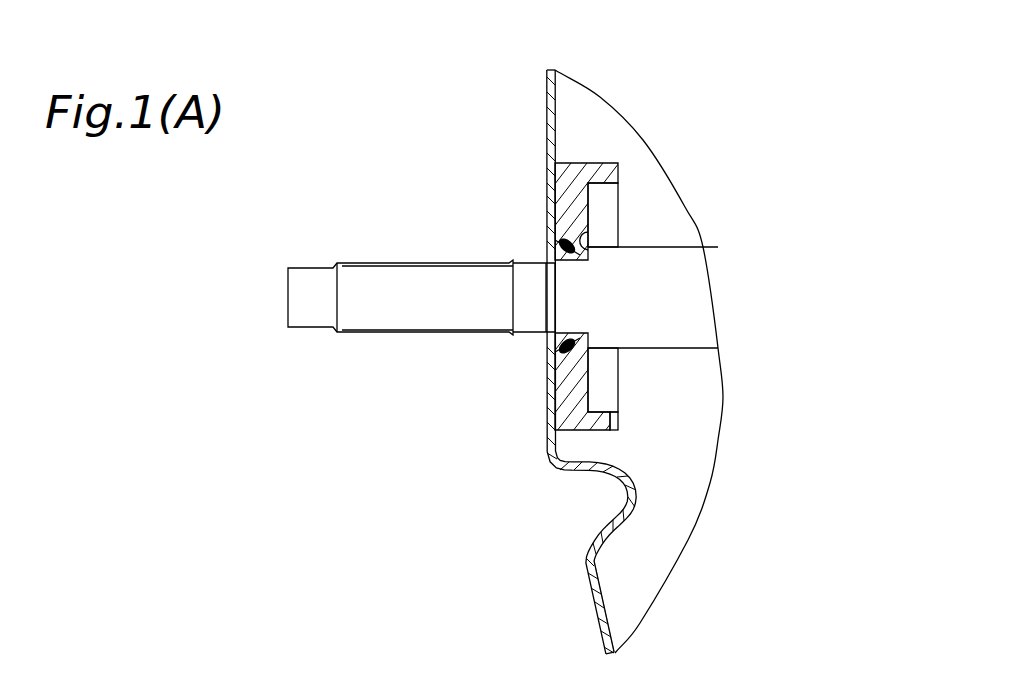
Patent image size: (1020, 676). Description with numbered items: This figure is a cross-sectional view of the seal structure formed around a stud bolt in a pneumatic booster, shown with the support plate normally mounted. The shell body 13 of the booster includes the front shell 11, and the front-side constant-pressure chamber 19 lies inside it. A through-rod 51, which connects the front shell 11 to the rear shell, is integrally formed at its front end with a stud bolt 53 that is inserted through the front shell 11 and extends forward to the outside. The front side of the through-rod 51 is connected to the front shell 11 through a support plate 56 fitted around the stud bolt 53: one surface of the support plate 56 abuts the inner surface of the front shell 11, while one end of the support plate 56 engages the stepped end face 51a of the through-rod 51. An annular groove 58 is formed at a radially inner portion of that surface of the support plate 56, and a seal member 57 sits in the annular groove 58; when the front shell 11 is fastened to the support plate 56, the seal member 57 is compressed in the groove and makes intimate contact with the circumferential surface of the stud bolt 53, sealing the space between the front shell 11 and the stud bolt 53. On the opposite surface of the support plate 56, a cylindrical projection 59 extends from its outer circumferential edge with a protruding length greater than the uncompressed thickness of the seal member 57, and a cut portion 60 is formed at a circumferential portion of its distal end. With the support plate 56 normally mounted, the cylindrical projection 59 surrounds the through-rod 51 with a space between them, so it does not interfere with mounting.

The front shell 11 is at (597, 592).
The shell body 13 is at (545, 109).
The constant-pressure chamber 19 is at (710, 397).
The through-rod 51 is at (697, 292).
The end face 51a is at (600, 232).
The stud bolt 53 is at (365, 275).
The support plate 56 is at (584, 163).
The seal member 57 is at (556, 246).
The annular groove 58 is at (548, 345).
The cylindrical projection 59 is at (613, 163).
The cut portion 60 is at (618, 422).